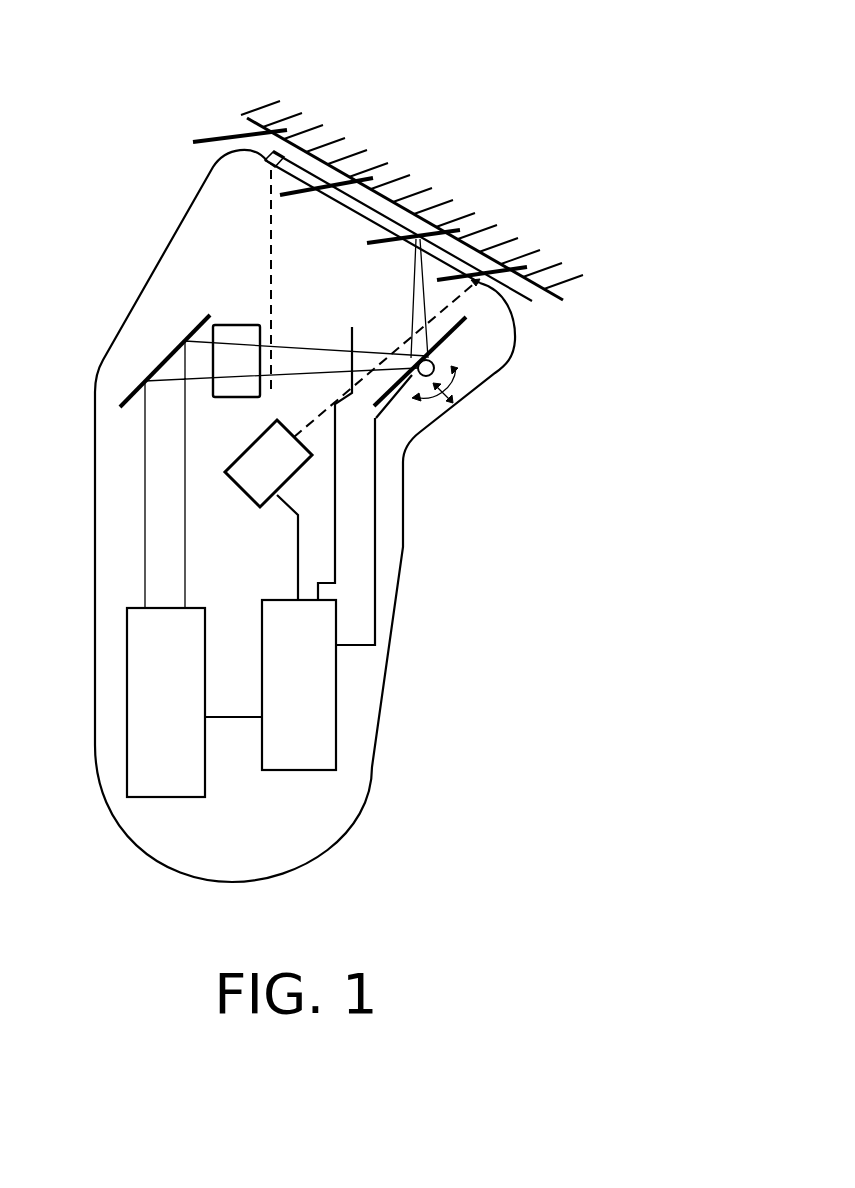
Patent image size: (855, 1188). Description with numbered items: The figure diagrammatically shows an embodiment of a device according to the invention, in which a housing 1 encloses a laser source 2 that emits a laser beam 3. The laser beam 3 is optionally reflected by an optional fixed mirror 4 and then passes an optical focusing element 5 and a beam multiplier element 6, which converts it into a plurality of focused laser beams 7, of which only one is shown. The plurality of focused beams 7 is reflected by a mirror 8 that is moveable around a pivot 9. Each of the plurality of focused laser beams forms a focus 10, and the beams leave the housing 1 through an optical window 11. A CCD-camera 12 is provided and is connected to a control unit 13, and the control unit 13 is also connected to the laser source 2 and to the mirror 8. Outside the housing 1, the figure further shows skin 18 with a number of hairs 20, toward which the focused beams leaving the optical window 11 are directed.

The housing 1 is at (95, 519).
The laser source 2 is at (140, 738).
The laser beam 3 is at (158, 567).
The fixed mirror 4 is at (147, 374).
The optical focusing element 5 is at (228, 392).
The beam multiplier element 6 is at (352, 338).
The focused laser beams 7 is at (377, 357).
The mirror 8 is at (400, 403).
The pivot 9 is at (433, 362).
The focus 10 is at (468, 238).
The optical window 11 is at (272, 170).
The CCD-camera 12 is at (250, 478).
The control unit 13 is at (323, 710).
The skin 18 is at (313, 140).
The hairs 20 is at (217, 134).